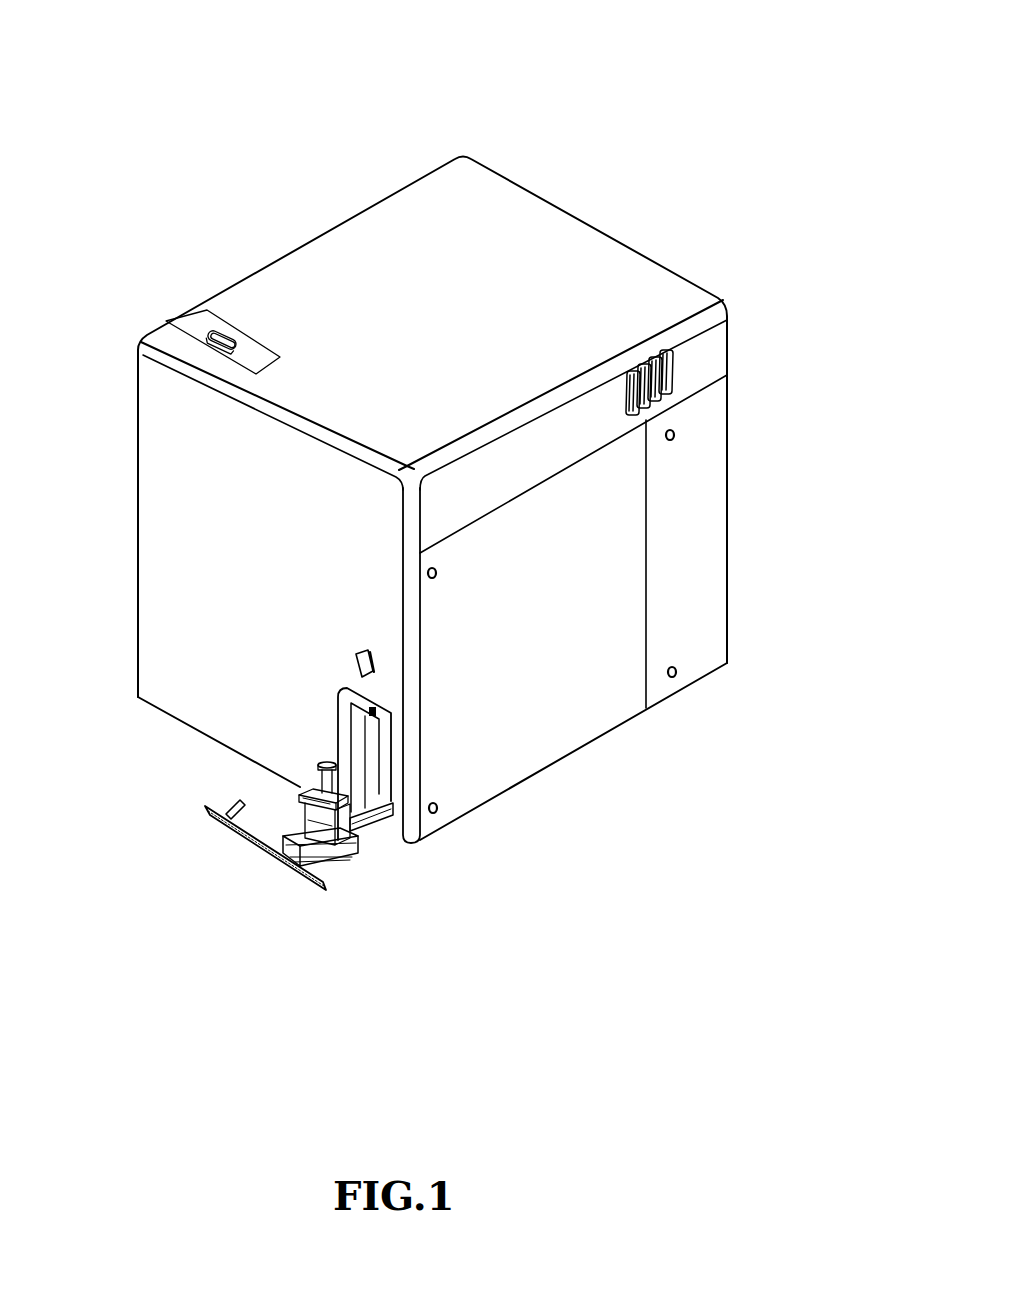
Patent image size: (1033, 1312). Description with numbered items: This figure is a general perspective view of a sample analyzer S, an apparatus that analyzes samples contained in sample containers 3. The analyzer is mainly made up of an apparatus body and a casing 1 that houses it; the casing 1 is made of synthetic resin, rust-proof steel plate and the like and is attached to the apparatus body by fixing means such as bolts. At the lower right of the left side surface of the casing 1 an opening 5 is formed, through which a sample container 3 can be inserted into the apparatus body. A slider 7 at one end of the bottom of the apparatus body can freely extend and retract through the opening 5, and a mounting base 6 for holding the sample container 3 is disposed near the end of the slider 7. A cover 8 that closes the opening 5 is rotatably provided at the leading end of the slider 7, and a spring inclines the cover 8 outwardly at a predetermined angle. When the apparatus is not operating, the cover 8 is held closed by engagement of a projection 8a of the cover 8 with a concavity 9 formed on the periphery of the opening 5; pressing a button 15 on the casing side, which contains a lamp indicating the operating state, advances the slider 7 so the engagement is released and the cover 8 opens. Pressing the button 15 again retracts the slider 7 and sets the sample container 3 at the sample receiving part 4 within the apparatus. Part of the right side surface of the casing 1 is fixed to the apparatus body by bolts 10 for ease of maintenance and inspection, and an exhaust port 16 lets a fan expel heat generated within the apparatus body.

The sample analyzer S is at (517, 148).
The casing 1 is at (587, 293).
The sample container 3 is at (303, 788).
The sample receiving part 4 is at (377, 869).
The opening 5 is at (381, 748).
The mounting base 6 is at (347, 871).
The slider 7 is at (393, 822).
The cover 8 is at (262, 849).
The projection 8a is at (228, 816).
The concavity 9 is at (337, 714).
The bolts 10 is at (680, 675).
The button 15 is at (352, 660).
The exhaust port 16 is at (672, 378).